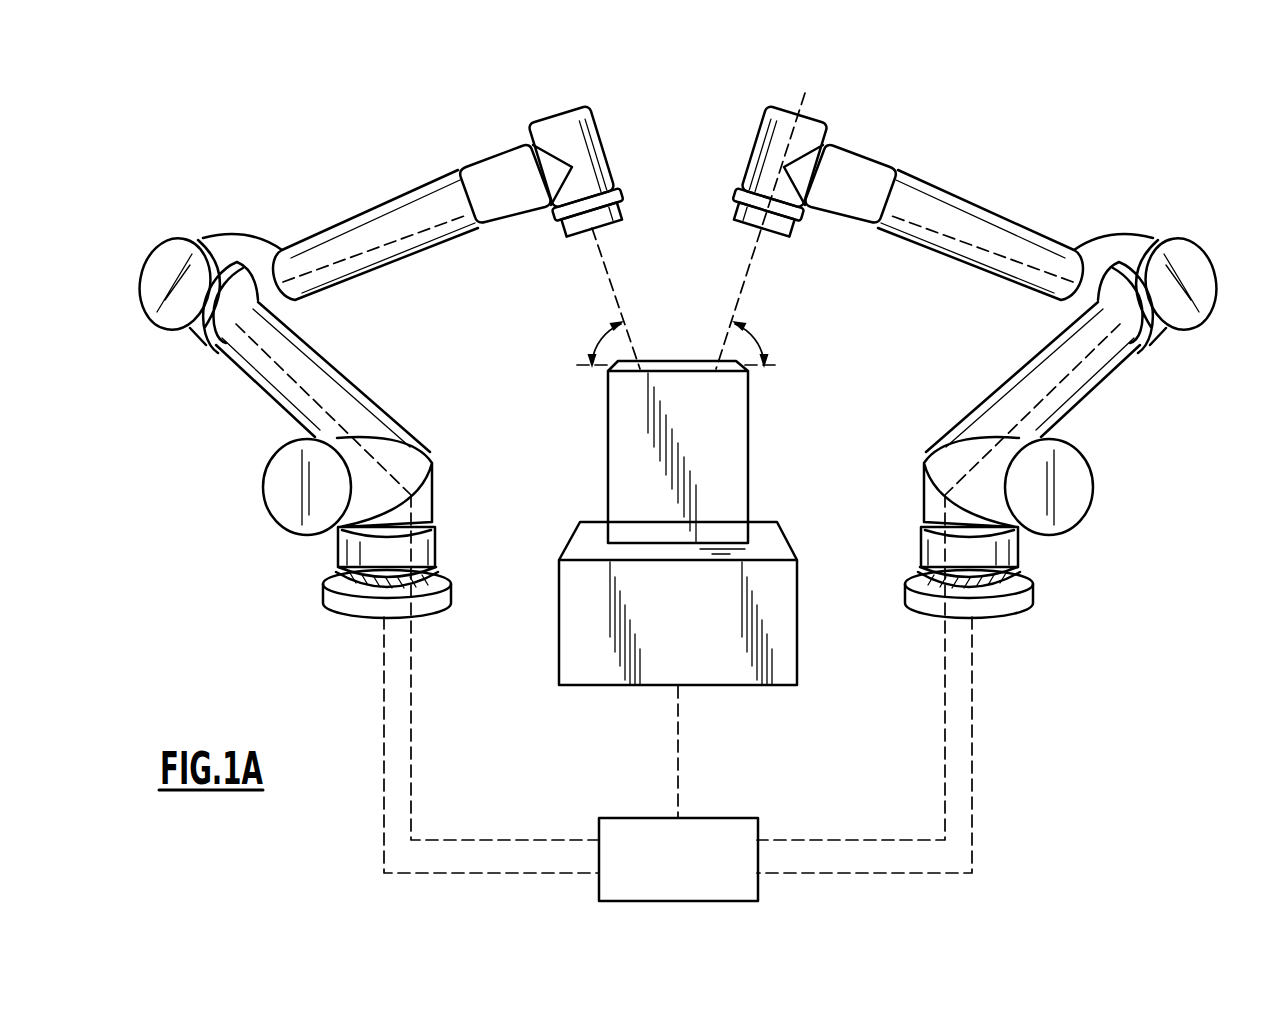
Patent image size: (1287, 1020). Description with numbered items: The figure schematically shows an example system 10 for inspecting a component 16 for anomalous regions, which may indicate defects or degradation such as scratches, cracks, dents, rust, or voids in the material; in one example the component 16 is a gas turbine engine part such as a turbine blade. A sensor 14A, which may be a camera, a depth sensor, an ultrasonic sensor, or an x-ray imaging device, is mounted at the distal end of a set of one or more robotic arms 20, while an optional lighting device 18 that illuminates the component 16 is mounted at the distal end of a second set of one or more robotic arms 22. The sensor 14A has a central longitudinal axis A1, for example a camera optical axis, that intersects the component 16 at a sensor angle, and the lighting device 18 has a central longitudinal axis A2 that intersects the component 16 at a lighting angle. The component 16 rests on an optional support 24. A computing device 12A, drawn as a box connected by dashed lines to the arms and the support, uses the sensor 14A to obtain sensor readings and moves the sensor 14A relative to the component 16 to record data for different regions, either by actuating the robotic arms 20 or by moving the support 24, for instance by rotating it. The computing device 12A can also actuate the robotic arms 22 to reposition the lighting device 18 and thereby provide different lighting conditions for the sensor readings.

The system 10 is at (1190, 105).
The computing device 12A is at (621, 903).
The sensor 14A is at (590, 125).
The component 16 is at (735, 453).
The lighting device 18 is at (768, 124).
The robotic arms 20 is at (366, 196).
The robotic arms 22 is at (990, 196).
The support 24 is at (602, 667).
The central longitudinal axis A1 is at (609, 270).
The central longitudinal axis A2 is at (754, 258).